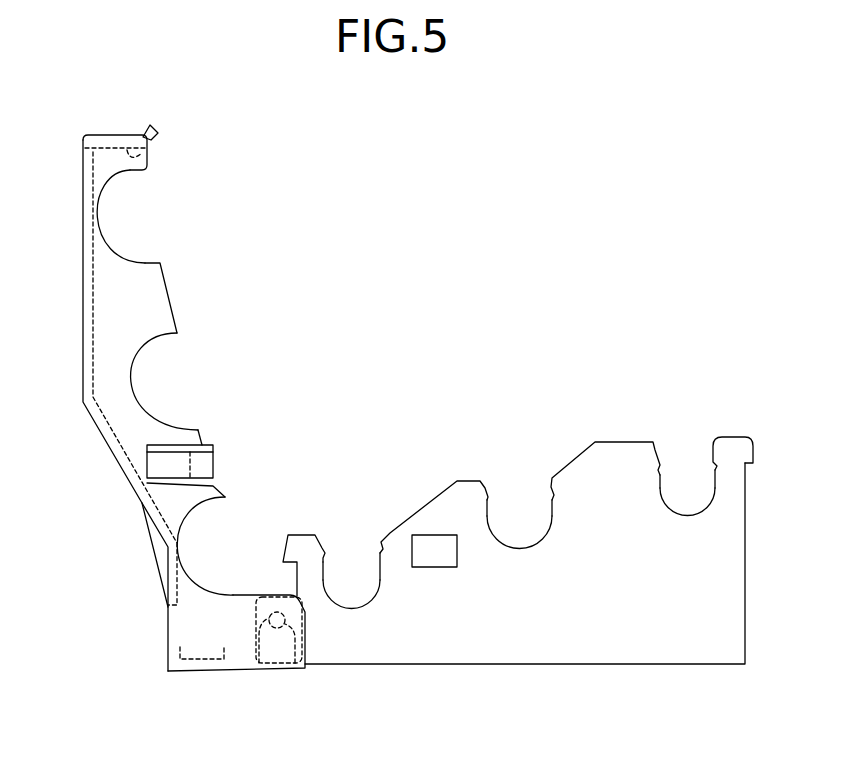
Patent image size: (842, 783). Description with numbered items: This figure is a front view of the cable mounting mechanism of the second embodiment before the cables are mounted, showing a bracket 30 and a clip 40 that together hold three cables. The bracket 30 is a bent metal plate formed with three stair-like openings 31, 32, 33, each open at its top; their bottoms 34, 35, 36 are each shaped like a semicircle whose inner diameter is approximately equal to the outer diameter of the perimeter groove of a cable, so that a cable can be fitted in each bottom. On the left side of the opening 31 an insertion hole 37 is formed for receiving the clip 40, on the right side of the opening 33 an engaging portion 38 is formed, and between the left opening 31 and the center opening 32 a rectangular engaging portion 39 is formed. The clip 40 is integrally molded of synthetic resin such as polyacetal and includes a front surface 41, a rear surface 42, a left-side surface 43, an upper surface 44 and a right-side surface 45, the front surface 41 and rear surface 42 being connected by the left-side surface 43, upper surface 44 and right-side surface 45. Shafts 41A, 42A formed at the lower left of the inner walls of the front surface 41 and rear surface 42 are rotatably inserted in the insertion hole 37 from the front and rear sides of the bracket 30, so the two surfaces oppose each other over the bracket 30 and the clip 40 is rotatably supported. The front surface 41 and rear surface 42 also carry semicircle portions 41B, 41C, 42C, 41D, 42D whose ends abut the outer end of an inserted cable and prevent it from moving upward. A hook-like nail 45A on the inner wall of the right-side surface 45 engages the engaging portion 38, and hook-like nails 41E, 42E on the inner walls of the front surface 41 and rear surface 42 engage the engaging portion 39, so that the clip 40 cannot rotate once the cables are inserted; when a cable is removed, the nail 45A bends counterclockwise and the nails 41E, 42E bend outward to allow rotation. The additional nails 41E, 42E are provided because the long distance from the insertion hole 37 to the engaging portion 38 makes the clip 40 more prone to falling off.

The bracket 30 is at (732, 635).
The opening 31 is at (372, 556).
The opening 32 is at (519, 521).
The opening 33 is at (685, 480).
The bottom 34 is at (361, 596).
The bottom 35 is at (526, 546).
The bottom 36 is at (691, 512).
The insertion hole 37 is at (292, 640).
The engaging portion 38 is at (745, 465).
The engaging portion 39 is at (445, 547).
The clip 40 is at (214, 408).
The front surface 41 is at (207, 405).
The rear surface 42 is at (168, 298).
The shaft 41A is at (260, 671).
The shaft 42A is at (262, 665).
The semicircle portion 41B is at (195, 578).
The semicircle portion 41C is at (232, 381).
The semicircle portion 42C is at (137, 385).
The semicircle portion 41D is at (200, 216).
The semicircle portion 42D is at (103, 213).
The nail 41E is at (273, 450).
The nail 42E is at (203, 452).
The left-side surface 43 is at (179, 661).
The upper surface 44 is at (86, 323).
The right-side surface 45 is at (104, 150).
The nail 45A is at (147, 152).